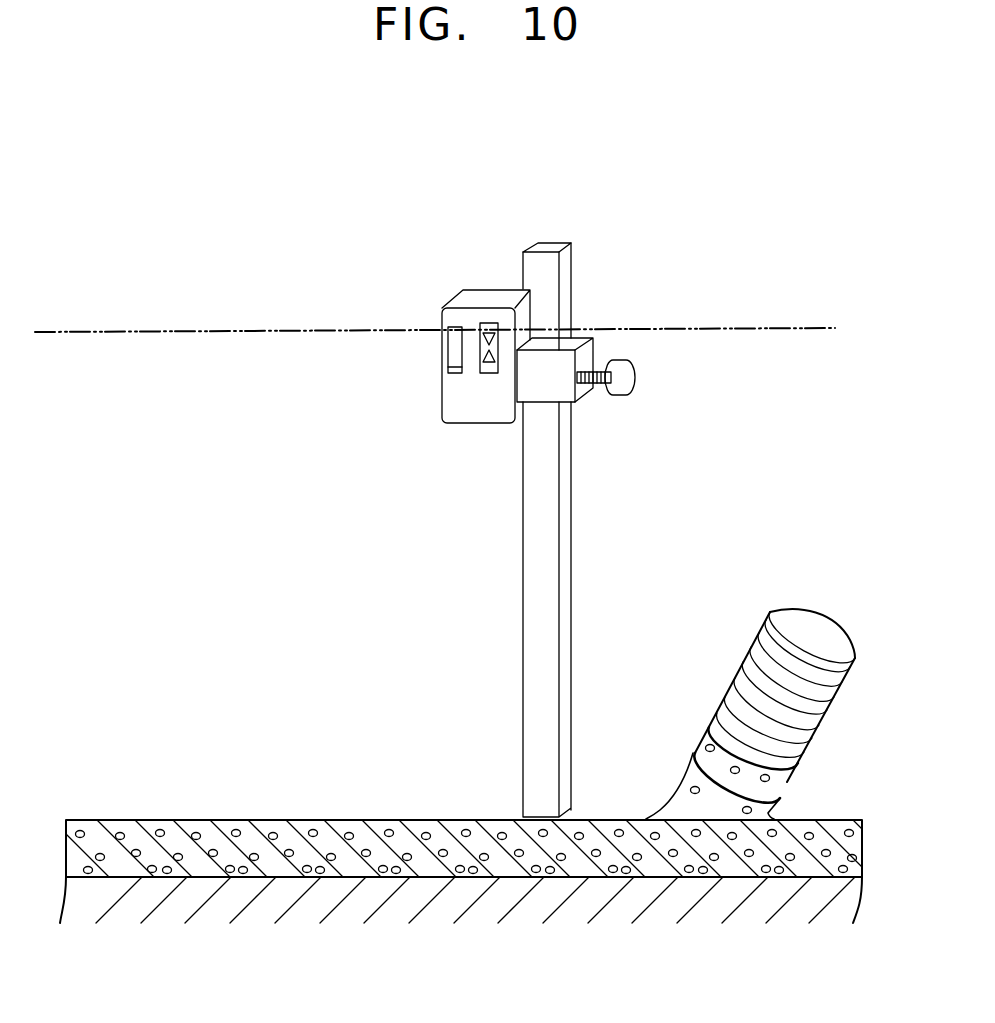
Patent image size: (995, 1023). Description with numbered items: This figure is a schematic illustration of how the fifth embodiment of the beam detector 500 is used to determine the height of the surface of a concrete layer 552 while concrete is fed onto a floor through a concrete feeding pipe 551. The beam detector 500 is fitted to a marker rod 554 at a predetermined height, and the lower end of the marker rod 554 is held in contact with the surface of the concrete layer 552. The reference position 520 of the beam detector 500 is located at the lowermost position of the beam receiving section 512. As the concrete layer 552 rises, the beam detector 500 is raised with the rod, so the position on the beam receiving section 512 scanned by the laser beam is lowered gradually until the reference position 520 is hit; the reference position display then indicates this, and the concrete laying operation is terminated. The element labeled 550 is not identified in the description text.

The beam detector 500 is at (431, 303).
The beam receiving section 512 is at (445, 323).
The reference position 520 is at (443, 360).
The marker rod 554 is at (552, 485).
The concrete feeding pipe 551 is at (762, 690).
The concrete layer 552 is at (307, 832).
The ground 550 is at (208, 888).